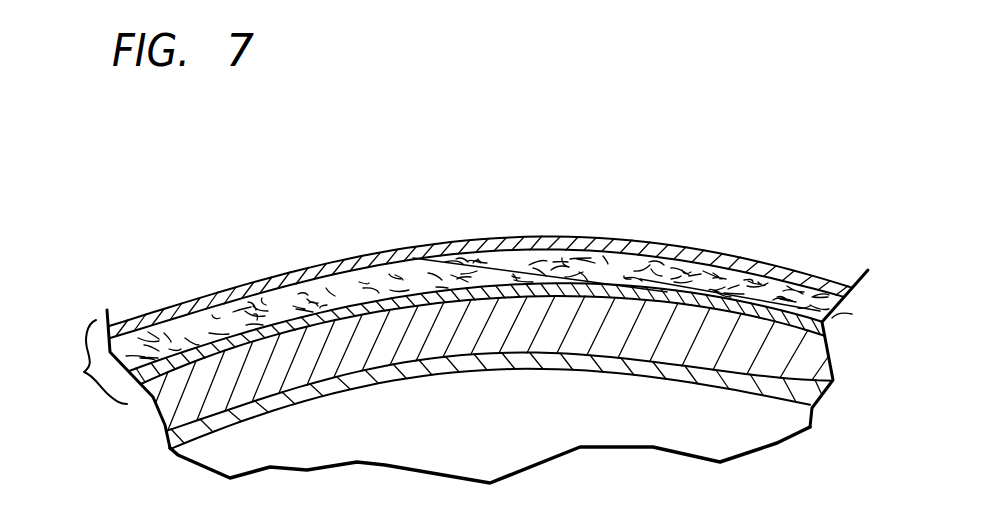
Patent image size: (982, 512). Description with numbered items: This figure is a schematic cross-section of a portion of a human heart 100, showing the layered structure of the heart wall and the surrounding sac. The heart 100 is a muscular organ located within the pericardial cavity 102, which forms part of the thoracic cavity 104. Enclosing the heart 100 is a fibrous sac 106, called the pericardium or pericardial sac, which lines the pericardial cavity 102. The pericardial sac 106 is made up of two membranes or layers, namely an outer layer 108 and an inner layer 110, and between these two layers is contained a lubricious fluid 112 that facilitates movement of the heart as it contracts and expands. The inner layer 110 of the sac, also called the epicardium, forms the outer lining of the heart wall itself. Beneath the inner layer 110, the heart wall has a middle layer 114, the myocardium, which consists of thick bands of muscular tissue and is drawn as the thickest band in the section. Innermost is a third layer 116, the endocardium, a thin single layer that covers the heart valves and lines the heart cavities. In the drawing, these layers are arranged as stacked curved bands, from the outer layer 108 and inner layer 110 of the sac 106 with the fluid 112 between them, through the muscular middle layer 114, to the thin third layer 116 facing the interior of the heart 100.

The human heart 100 is at (669, 218).
The pericardial cavity 102 is at (605, 201).
The thoracic cavity 104 is at (412, 118).
The pericardial sac 106 is at (79, 362).
The outer layer 108 is at (190, 304).
The inner layer 110 is at (283, 326).
The lubricious fluid 112 is at (353, 273).
The middle layer 114 is at (447, 317).
The third layer 116 is at (513, 360).